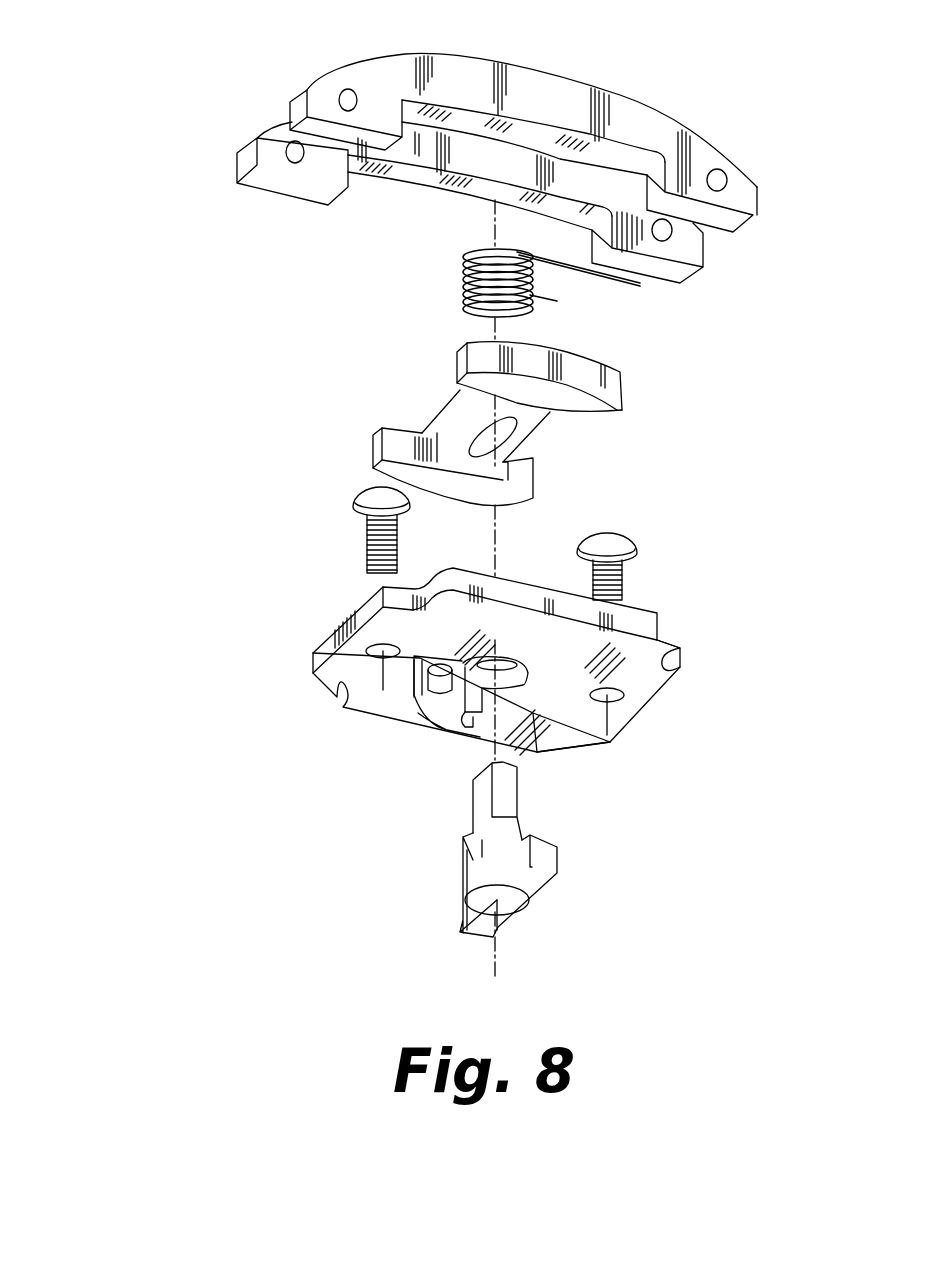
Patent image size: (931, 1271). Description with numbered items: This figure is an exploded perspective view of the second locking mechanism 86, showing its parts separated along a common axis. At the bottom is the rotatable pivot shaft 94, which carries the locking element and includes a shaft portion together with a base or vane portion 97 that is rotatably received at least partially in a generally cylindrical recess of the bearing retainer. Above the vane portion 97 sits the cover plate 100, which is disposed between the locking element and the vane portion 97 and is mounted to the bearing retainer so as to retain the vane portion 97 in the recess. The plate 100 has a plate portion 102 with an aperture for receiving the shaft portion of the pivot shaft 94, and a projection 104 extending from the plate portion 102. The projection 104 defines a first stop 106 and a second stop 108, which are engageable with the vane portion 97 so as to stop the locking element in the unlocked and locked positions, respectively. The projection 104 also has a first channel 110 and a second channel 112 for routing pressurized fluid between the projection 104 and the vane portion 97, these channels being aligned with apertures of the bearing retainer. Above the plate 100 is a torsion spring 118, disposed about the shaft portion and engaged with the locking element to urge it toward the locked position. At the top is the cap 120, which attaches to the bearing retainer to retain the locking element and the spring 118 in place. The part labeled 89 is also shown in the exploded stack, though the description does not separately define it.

The second locking mechanism 86 is at (228, 305).
The clamp member 89 is at (497, 523).
The pivot shaft 94 is at (517, 800).
The vane portion 97 is at (550, 862).
The cover plate 100 is at (677, 680).
The plate portion 102 is at (630, 720).
The projection 104 is at (414, 703).
The first stop 106 is at (414, 677).
The second stop 108 is at (500, 707).
The first channel 110 is at (443, 683).
The second channel 112 is at (473, 722).
The torsion spring 118 is at (463, 287).
The cap 120 is at (657, 107).